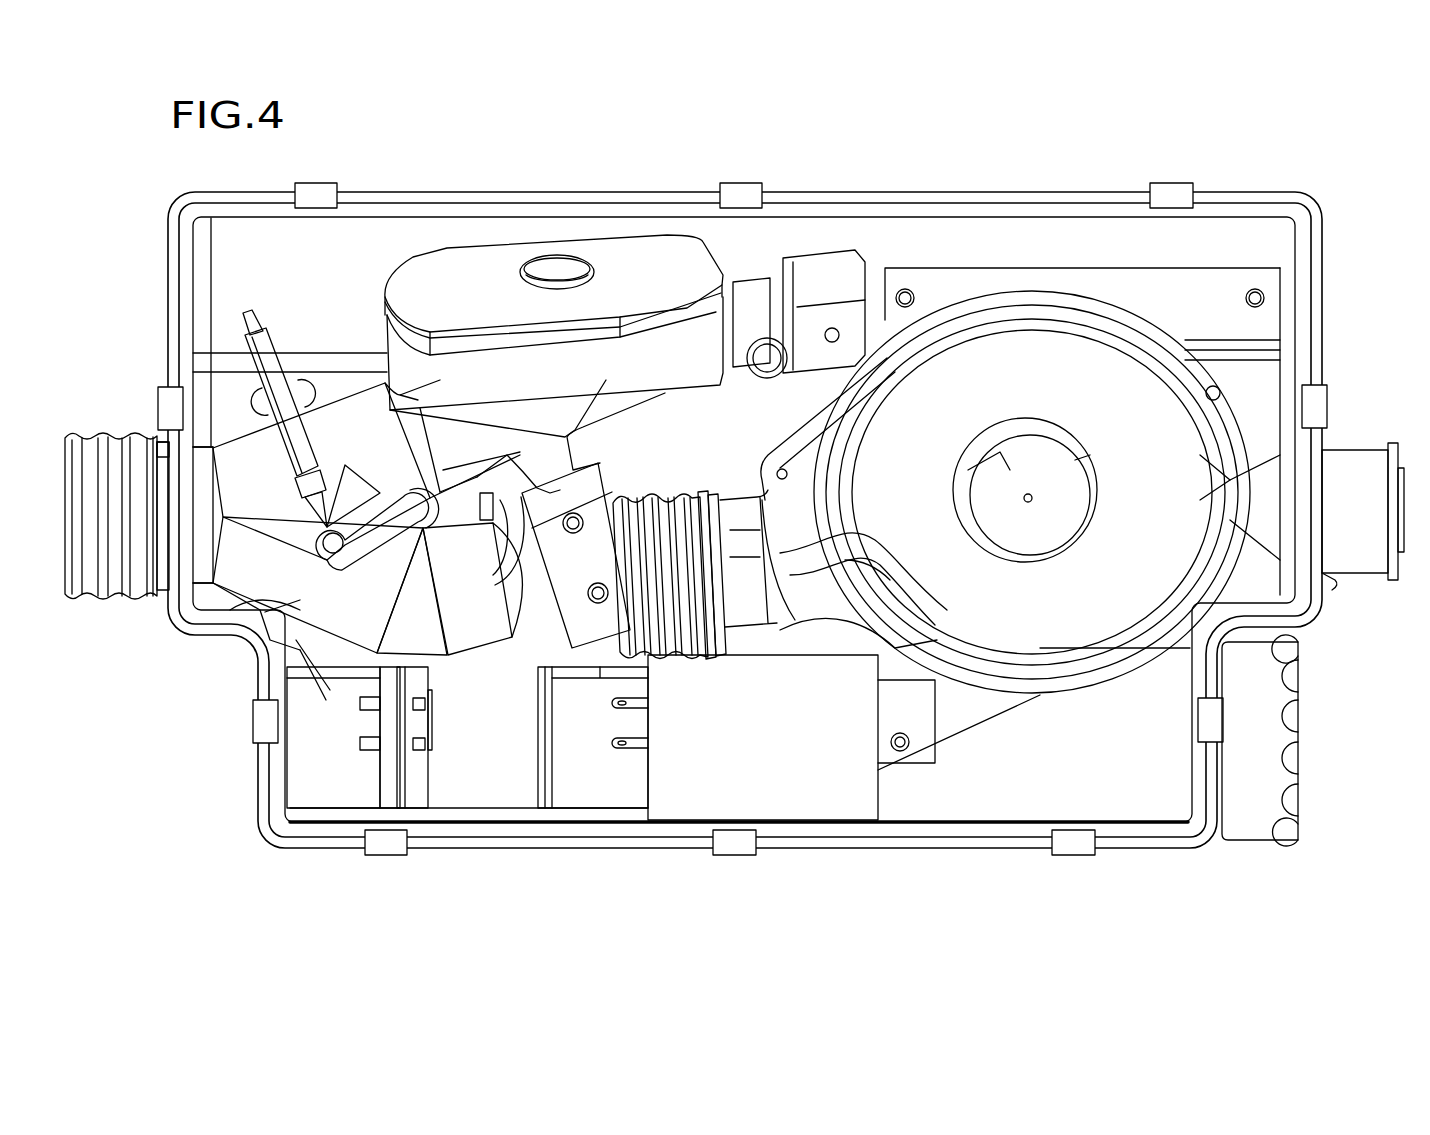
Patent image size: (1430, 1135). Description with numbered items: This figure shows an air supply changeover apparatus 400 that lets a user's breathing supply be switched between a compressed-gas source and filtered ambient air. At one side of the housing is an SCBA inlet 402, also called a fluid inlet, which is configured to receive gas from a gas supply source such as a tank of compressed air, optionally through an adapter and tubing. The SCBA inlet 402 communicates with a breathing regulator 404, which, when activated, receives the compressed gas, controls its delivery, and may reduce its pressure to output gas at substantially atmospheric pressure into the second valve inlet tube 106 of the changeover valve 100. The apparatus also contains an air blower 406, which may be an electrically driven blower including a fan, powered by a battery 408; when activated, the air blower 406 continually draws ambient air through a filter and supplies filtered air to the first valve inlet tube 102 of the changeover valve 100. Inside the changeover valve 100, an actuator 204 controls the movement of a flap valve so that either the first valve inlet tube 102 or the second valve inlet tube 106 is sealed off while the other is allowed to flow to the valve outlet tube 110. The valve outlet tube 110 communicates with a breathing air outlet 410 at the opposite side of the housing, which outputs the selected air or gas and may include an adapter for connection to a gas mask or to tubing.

The changeover valve 100 is at (227, 602).
The first valve inlet tube 102 is at (493, 648).
The second valve inlet tube 106 is at (364, 380).
The valve outlet tube 110 is at (200, 447).
The actuator 204 is at (212, 353).
The air supply changeover apparatus 400 is at (224, 903).
The SCBA inlet 402 is at (1403, 492).
The breathing regulator 404 is at (573, 256).
The air blower 406 is at (1233, 403).
The battery 408 is at (1298, 712).
The breathing air outlet 410 is at (120, 608).